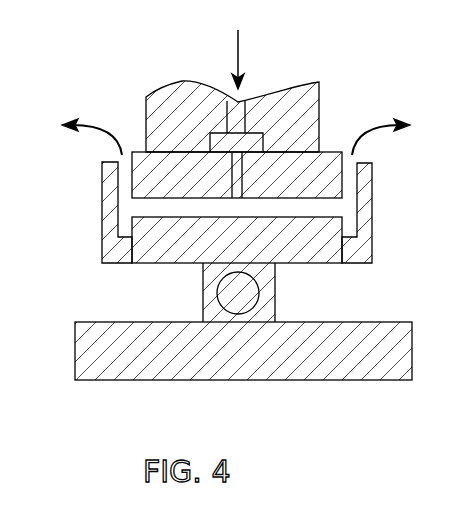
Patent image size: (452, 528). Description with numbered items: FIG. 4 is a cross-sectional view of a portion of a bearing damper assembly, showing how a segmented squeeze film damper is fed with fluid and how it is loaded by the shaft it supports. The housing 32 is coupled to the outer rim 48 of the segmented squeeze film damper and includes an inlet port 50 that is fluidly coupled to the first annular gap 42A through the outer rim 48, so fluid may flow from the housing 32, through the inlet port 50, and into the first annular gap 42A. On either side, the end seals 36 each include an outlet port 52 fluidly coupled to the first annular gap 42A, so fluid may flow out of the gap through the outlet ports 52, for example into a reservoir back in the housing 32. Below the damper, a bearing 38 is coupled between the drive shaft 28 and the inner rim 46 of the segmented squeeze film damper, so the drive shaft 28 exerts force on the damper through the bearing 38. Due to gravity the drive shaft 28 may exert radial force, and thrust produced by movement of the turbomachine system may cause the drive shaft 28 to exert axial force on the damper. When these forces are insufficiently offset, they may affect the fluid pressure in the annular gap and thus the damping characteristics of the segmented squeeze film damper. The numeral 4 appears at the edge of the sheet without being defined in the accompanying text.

The assembly 4 is at (239, 238).
The drive shaft 28 is at (366, 366).
The housing 32 is at (158, 100).
The end seals 36 is at (102, 223).
The bearing 38 is at (276, 266).
The first annular gap 42A is at (315, 212).
The inner rim 46 is at (148, 263).
The outer rim 48 is at (132, 184).
The inlet port 50 is at (225, 112).
The outlet port 52 is at (125, 140).